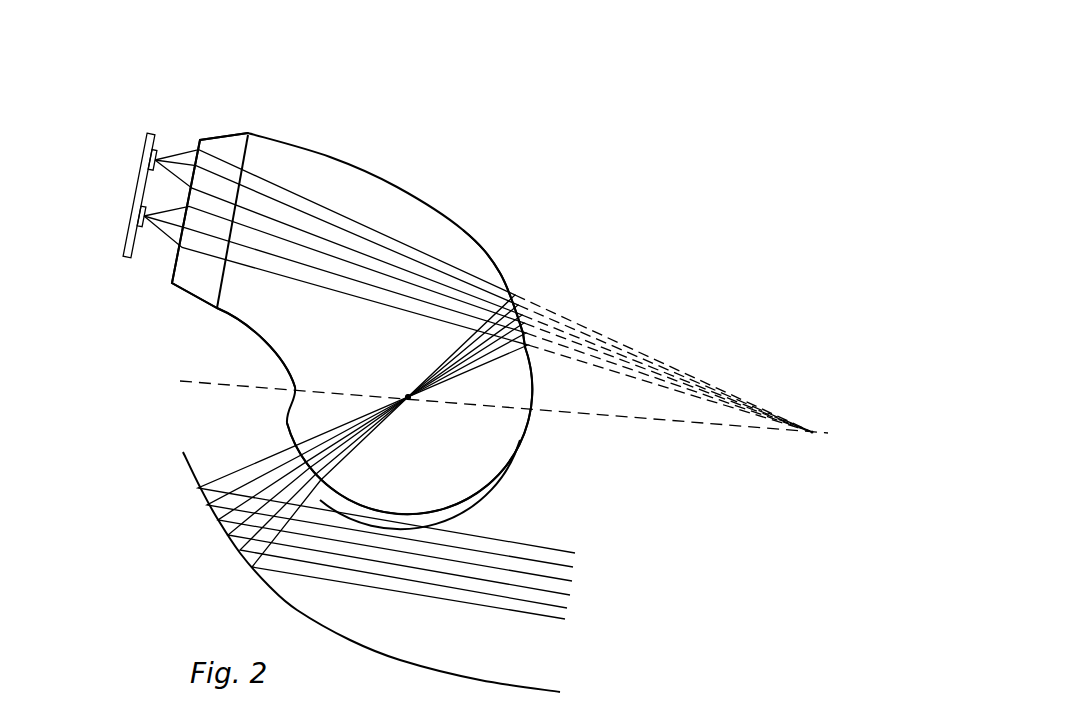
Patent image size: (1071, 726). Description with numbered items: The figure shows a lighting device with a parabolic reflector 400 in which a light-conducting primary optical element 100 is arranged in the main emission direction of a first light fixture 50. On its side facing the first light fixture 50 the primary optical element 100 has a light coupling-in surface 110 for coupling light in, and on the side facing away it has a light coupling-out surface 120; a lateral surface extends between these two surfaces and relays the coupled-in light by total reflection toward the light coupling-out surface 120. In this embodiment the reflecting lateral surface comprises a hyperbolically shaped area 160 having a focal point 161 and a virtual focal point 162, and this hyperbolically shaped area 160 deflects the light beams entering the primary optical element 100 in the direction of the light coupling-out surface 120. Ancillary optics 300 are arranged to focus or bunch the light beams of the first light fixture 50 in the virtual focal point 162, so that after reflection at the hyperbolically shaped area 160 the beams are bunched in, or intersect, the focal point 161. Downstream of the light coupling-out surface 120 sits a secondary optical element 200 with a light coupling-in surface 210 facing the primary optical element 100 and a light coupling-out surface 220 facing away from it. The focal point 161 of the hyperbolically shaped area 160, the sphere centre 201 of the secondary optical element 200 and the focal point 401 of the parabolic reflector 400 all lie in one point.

The first light fixture 50 is at (143, 173).
The primary optical element 100 is at (319, 177).
The light coupling-in surface 110 is at (222, 273).
The light coupling-out surface 120 is at (367, 396).
The hyperbolically shaped area 160 is at (498, 273).
The focal point 161 is at (408, 397).
The virtual focal point 162 is at (813, 432).
The secondary optical element 200 is at (463, 476).
The sphere centre 201 is at (408, 397).
The light coupling-in surface 210 is at (323, 392).
The light coupling-out surface 220 is at (463, 503).
The ancillary optics 300 is at (230, 148).
The parabolic reflector 400 is at (270, 587).
The focal point 401 is at (408, 397).